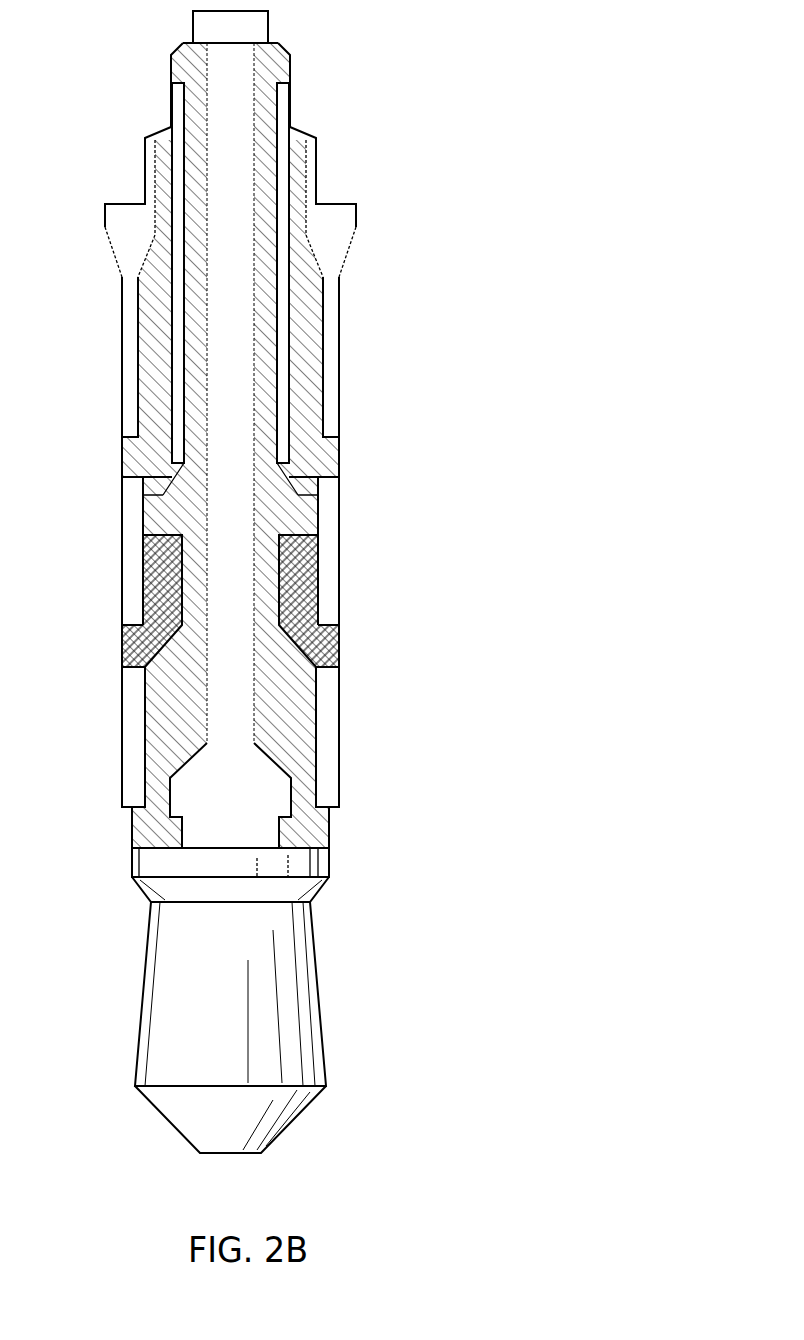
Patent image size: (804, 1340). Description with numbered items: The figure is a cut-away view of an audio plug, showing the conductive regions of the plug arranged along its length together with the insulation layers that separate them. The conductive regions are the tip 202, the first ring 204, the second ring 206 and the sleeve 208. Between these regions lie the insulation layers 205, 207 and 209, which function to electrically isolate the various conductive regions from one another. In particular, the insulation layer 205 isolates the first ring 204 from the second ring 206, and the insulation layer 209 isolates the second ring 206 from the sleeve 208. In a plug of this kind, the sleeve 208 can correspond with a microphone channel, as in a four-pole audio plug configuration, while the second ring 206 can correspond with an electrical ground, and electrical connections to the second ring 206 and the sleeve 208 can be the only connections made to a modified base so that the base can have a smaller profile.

The tip 202 is at (320, 1042).
The first ring 204 is at (338, 728).
The insulation layer 205 is at (340, 637).
The second ring 206 is at (333, 520).
The insulation layer 207 is at (133, 817).
The sleeve 208 is at (337, 348).
The insulation layer 209 is at (307, 132).